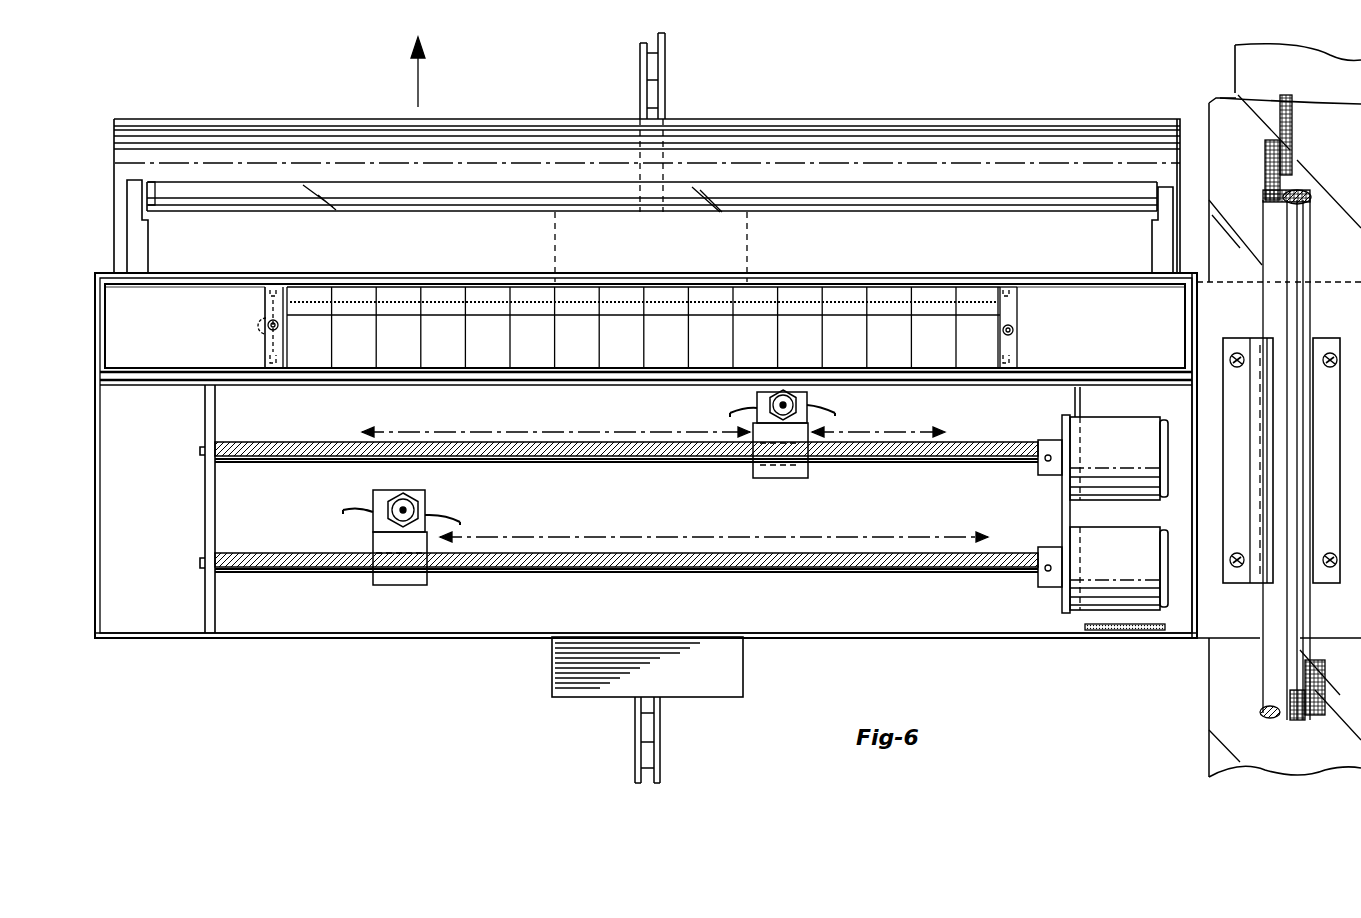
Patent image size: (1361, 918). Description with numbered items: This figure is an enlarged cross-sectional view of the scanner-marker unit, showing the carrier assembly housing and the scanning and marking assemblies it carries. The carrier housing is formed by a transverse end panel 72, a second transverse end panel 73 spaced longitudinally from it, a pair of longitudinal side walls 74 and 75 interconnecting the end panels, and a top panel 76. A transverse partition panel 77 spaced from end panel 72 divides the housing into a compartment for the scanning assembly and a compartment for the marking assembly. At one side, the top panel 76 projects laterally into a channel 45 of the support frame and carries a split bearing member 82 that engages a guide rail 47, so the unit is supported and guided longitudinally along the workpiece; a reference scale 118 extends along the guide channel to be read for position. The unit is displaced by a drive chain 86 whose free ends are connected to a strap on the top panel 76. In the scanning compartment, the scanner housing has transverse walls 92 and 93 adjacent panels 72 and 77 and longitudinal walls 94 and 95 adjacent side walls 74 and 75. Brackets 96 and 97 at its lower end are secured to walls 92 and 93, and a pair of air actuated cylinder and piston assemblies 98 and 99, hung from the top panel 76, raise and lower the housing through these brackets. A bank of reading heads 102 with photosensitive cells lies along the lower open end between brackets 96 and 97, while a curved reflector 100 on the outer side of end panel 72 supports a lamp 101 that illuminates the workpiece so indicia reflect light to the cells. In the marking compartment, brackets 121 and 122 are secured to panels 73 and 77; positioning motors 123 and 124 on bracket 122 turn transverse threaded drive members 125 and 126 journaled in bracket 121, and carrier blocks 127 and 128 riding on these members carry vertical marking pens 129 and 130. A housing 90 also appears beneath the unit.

The channel 45 is at (1235, 84).
The reference scale 118 is at (1227, 123).
The curved reflector 100 is at (917, 123).
The lamp 101 is at (867, 190).
The drive chain 86 is at (665, 80).
The reading heads 102 is at (715, 295).
The transverse end panel 72 is at (860, 276).
The longitudinal side wall 74 is at (95, 332).
The transverse partition panel 77 is at (545, 400).
The longitudinal wall 94 is at (108, 337).
The transverse wall 93 is at (213, 367).
The bracket 96 is at (265, 305).
The air actuated cylinder and piston assembly 98 is at (255, 332).
The transverse wall 92 is at (1060, 296).
The air actuated cylinder and piston assembly 99 is at (1022, 332).
The bracket 97 is at (1018, 357).
The longitudinal wall 95 is at (1180, 343).
The split bearing member 82 is at (1236, 334).
The longitudinal side wall 75 is at (1190, 405).
The bracket 121 is at (203, 508).
The threaded drive member 125 is at (607, 467).
The threaded drive member 126 is at (812, 555).
The carrier block 127 is at (792, 478).
The marking pen 129 is at (810, 402).
The carrier block 128 is at (412, 587).
The marking pen 130 is at (417, 505).
The bracket 122 is at (1063, 508).
The positioning motor 123 is at (1127, 456).
The positioning motor 124 is at (1127, 568).
The transverse end panel 73 is at (440, 640).
The bottom housing 90 is at (723, 668).
The top panel 76 is at (1208, 627).
The guide rail 47 is at (1265, 693).